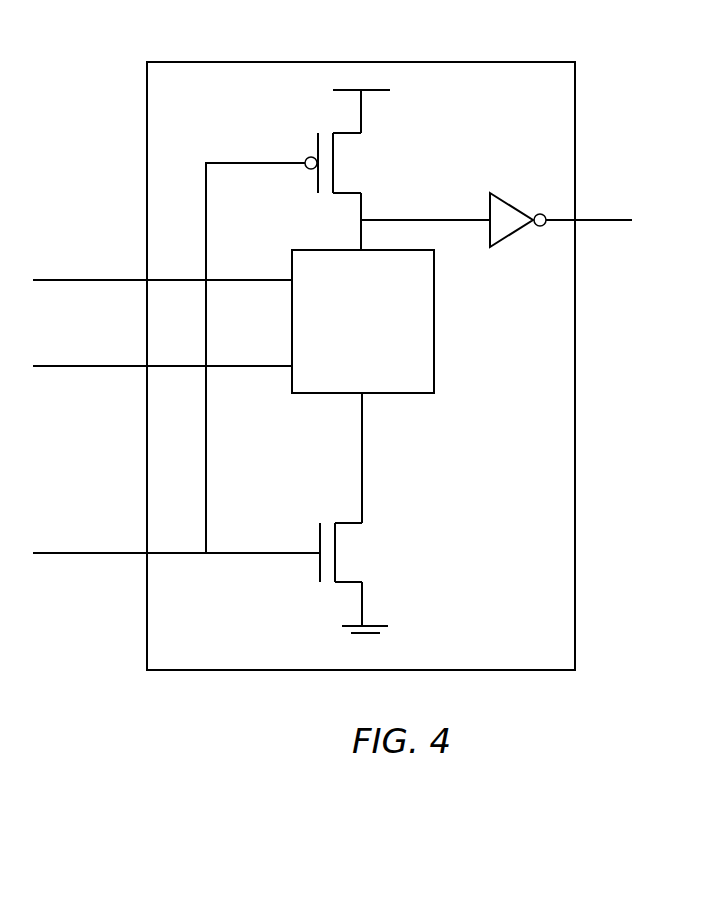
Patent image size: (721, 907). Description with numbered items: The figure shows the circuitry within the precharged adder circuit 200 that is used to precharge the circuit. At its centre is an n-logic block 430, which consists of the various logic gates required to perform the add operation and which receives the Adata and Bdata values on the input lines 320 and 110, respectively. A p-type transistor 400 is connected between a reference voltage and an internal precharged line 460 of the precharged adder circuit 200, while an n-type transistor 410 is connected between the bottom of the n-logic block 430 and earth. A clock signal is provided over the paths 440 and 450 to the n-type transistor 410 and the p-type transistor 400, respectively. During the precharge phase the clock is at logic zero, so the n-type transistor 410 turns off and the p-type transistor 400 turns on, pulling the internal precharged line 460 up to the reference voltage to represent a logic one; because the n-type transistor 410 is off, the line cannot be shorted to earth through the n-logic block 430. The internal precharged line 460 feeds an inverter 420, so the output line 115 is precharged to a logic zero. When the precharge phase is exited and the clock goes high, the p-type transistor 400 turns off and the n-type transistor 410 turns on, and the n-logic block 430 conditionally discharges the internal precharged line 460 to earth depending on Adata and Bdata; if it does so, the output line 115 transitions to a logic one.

The precharged adder circuit 200 is at (481, 57).
The p-type transistor 400 is at (335, 178).
The n-type transistor 410 is at (337, 562).
The inverter 420 is at (518, 207).
The n-logic block 430 is at (434, 360).
The clock signal path 440 is at (218, 552).
The clock signal path 450 is at (207, 195).
The internal precharged line 460 is at (376, 220).
The input line 320 is at (125, 278).
The input line 110 is at (131, 367).
The output line 115 is at (583, 215).